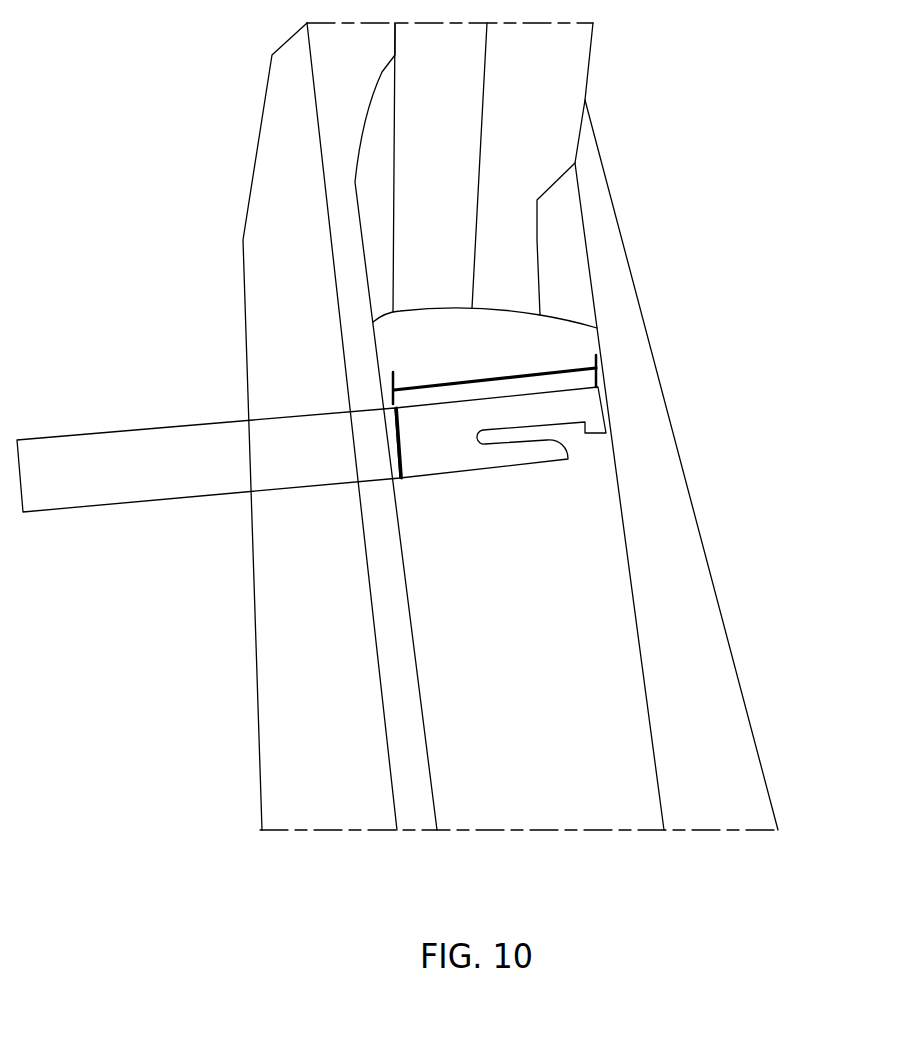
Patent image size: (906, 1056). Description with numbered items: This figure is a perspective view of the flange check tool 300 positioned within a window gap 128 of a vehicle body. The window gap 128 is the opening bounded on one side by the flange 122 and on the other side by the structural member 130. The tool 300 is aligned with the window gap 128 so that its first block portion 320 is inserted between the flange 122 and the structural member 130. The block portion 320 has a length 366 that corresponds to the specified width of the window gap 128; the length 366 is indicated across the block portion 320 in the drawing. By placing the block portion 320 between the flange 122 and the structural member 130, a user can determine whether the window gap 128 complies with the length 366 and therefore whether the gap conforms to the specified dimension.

The flange 122 is at (380, 515).
The window gap 128 is at (530, 341).
The structural member 130 is at (648, 393).
The flange check tool 300 is at (195, 423).
The first block portion 320 is at (480, 472).
The length of the first block portion 366 is at (460, 380).